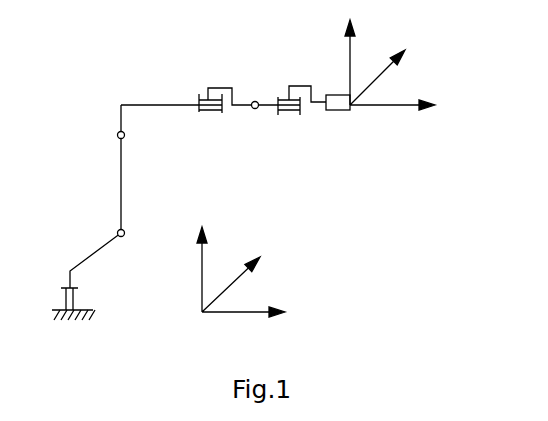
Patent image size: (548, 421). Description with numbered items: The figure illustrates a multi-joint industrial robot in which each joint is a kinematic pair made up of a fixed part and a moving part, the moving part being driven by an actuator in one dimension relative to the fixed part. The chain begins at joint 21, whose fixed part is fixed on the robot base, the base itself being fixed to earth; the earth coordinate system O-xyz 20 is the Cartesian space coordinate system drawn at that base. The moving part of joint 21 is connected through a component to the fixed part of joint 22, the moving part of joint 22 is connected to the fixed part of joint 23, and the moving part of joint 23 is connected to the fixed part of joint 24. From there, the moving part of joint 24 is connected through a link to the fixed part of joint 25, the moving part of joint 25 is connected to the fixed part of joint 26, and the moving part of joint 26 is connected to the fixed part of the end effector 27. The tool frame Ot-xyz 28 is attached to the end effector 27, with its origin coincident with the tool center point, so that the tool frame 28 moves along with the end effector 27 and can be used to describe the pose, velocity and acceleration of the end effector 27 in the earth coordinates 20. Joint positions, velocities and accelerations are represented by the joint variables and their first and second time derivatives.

The earth coordinate system O-xyz 20 is at (286, 273).
The joint 21 is at (57, 293).
The joint 22 is at (111, 230).
The joint 23 is at (111, 133).
The joint 24 is at (197, 97).
The joint 25 is at (252, 91).
The joint 26 is at (283, 92).
The end effector 27 is at (327, 88).
The tool frame Ot-xyz 28 is at (418, 73).